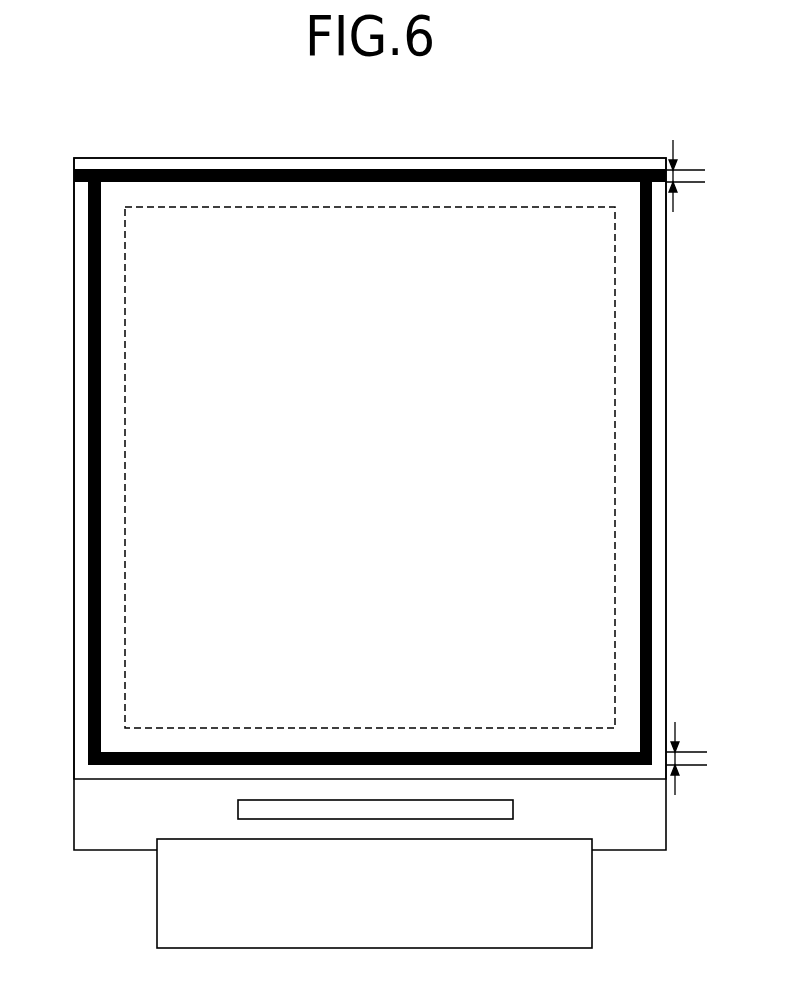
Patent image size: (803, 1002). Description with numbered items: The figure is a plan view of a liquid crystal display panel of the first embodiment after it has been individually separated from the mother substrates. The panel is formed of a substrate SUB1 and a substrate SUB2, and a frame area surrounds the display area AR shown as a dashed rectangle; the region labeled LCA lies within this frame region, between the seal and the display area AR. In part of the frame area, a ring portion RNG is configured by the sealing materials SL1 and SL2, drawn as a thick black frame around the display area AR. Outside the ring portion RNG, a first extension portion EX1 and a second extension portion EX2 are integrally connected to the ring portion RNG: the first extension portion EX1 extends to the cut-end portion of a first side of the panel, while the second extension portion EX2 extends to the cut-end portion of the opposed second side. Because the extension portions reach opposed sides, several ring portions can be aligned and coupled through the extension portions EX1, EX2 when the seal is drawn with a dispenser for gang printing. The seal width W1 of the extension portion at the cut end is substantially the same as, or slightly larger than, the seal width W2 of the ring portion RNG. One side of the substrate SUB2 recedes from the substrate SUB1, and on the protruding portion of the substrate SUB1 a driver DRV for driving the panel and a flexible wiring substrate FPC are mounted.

The substrate SUB1 is at (127, 850).
The substrate SUB2 is at (100, 779).
The sealing material SL1 is at (395, 170).
The sealing material SL2 is at (100, 227).
The first extension portion EX1 is at (83, 170).
The second extension portion EX2 is at (662, 170).
The ring portion RNG is at (650, 456).
The display area AR is at (452, 207).
The liquid crystal area LCA is at (523, 193).
The seal width W1 is at (712, 176).
The seal width W2 is at (710, 758).
The driver DRV is at (493, 820).
The flexible wiring substrate FPC is at (552, 912).